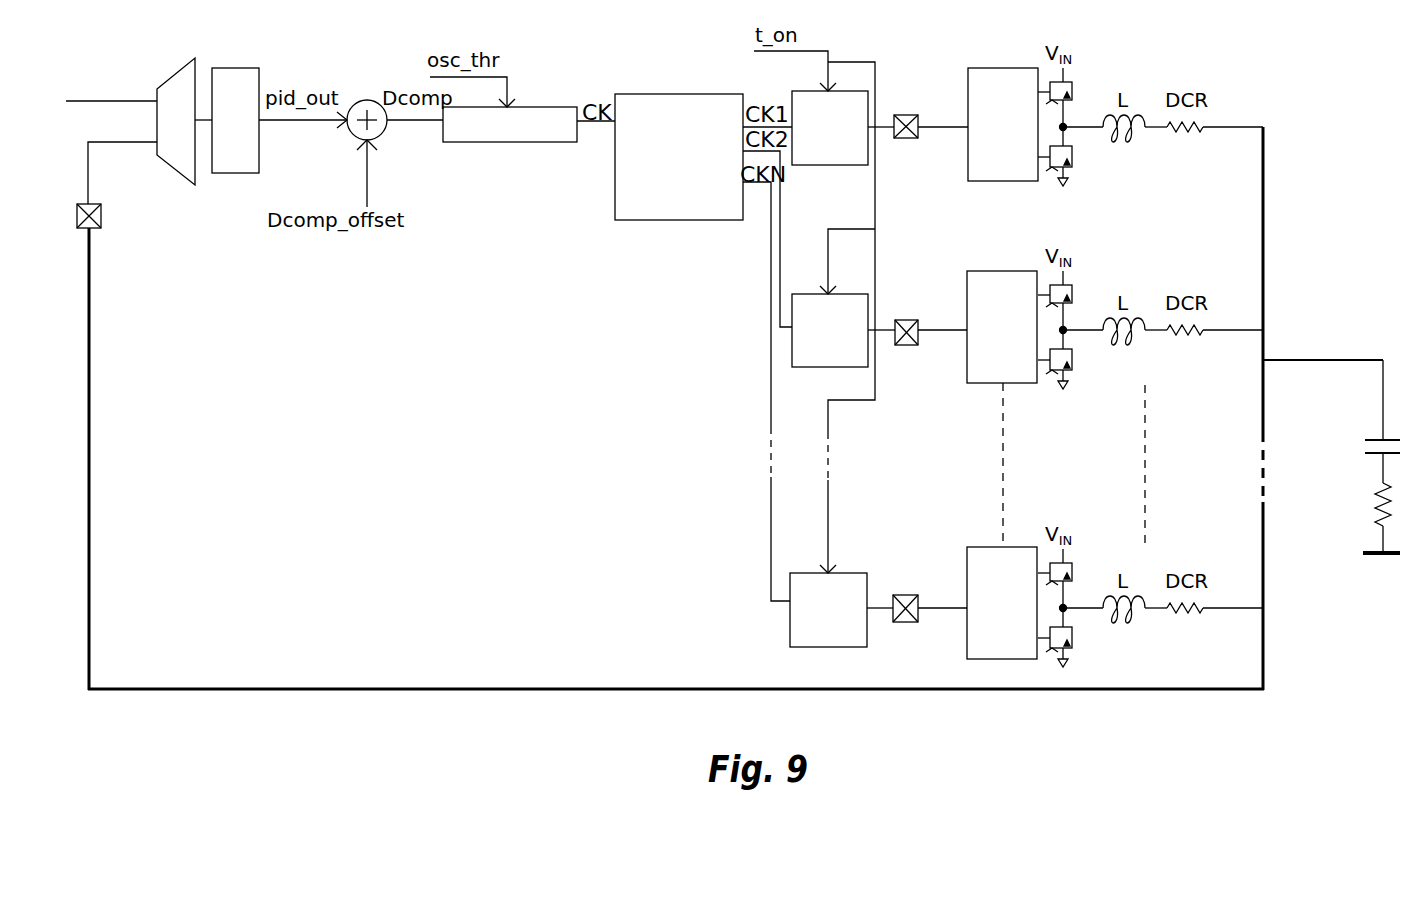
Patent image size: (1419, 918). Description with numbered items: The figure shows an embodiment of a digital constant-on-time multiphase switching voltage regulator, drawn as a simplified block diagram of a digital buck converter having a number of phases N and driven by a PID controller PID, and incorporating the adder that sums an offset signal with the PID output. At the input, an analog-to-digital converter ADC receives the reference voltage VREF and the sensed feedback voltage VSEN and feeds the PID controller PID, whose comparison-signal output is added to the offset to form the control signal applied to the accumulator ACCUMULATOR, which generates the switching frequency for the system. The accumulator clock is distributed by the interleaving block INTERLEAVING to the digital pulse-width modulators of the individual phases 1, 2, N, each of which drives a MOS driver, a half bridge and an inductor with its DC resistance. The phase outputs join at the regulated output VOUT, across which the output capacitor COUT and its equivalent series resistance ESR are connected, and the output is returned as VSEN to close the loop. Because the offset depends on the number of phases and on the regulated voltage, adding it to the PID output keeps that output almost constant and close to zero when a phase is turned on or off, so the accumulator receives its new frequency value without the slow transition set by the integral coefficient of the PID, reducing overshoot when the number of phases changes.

The power stage channel 1 (DPWM, PWM 1, MOS driver, half bridge, L, DCR) 1 is at (1027, 113).
The power stage channel 2 (DPWM, PWM 2, MOS driver, half bridge, L, DCR) 2 is at (1027, 316).
The number of phases N is at (1026, 594).
The reference voltage input VREF is at (111, 87).
The analog-to-digital converter ADC is at (184, 121).
The element PID is at (235, 120).
The accumulator ACCUMULATOR is at (510, 124).
The interleaving block INTERLEAVING is at (679, 157).
The voltage sense input VSEN is at (119, 186).
The output voltage node VOUT is at (1323, 386).
The output capacitor COUT is at (1347, 460).
The output capacitor equivalent series resistance ESR is at (1352, 518).